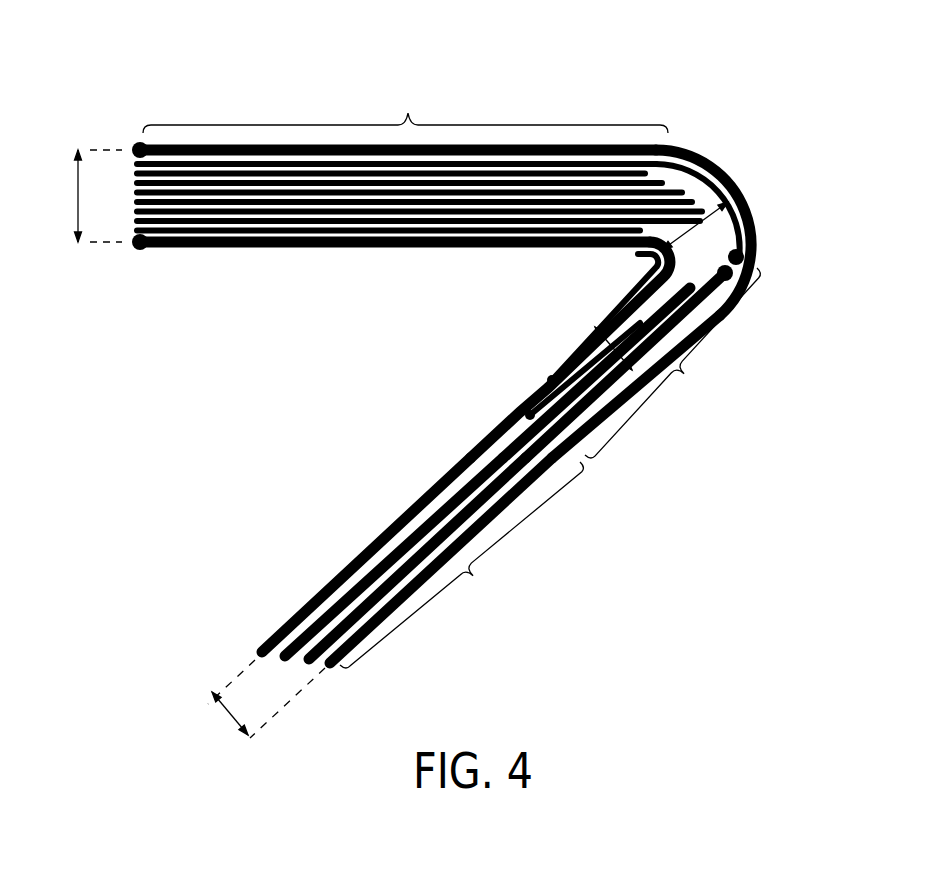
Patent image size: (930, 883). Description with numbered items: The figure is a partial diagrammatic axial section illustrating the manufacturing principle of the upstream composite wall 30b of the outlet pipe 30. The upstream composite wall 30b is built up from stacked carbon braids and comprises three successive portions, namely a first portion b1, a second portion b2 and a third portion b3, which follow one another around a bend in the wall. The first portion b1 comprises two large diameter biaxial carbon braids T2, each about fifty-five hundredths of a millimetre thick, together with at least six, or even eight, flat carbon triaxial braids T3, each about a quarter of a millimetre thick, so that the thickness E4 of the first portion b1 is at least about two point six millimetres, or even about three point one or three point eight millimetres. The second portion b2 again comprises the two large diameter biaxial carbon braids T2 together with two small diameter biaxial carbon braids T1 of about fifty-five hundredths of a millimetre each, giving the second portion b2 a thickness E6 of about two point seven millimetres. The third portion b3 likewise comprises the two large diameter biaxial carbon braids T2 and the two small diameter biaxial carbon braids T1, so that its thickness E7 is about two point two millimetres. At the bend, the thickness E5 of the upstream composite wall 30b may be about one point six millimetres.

The outlet pipe 30 is at (670, 97).
The upstream composite wall 30b is at (535, 88).
The small diameter biaxial carbon braid T1 is at (528, 440).
The large diameter biaxial carbon braid T2 is at (672, 158).
The flat carbon triaxial braid T3 is at (173, 192).
The first portion b1 is at (405, 107).
The second portion b2 is at (672, 363).
The third portion b3 is at (461, 565).
The thickness of the first portion E4 is at (81, 196).
The thickness of the upstream composite wall at the bend E5 is at (733, 207).
The thickness of the second portion E6 is at (592, 328).
The thickness of the third portion E7 is at (259, 700).